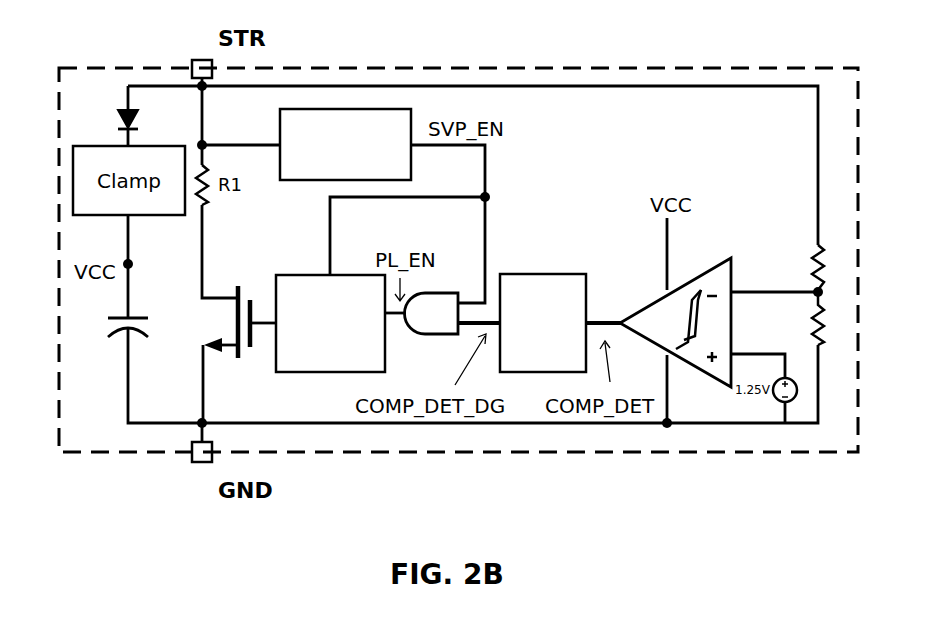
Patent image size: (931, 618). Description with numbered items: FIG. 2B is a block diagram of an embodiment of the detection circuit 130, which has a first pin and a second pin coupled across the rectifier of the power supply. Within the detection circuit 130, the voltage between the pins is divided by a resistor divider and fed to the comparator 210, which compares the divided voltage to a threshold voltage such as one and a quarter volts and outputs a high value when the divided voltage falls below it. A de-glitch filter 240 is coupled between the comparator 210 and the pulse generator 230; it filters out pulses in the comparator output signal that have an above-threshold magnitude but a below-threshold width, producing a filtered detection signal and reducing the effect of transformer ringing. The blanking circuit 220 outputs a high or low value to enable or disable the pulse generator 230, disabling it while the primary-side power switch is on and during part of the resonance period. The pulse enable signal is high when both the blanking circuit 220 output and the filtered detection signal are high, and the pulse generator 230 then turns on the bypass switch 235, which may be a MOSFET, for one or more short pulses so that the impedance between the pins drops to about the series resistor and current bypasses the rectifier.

The detection circuit 130 is at (108, 72).
The comparator 210 is at (700, 370).
The blanking circuit 220 is at (375, 108).
The pulse generator 230 is at (325, 372).
The bypass switch 235 is at (237, 357).
The de-glitch filter 240 is at (556, 273).